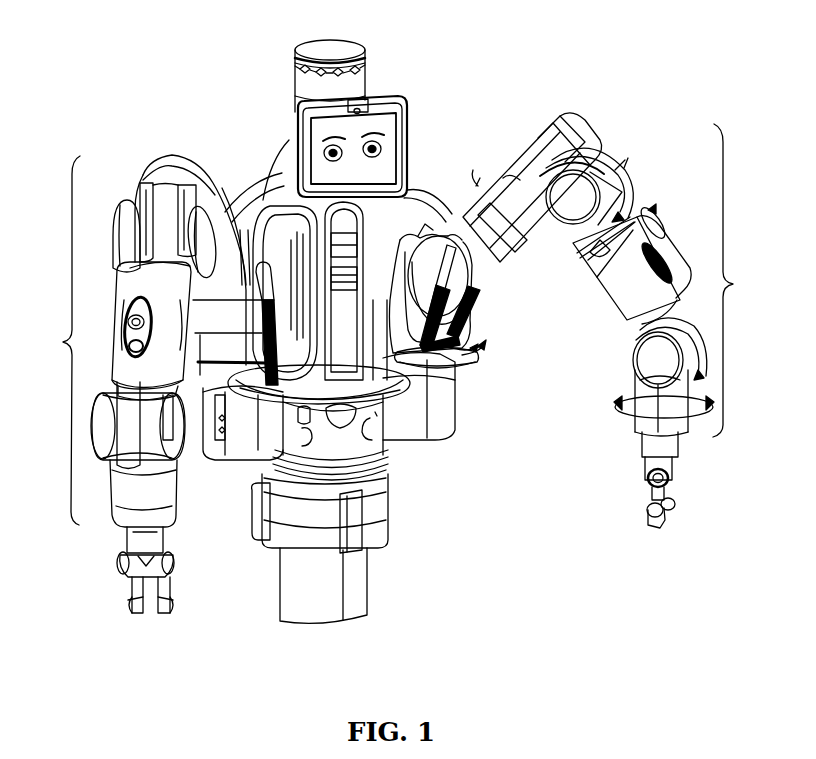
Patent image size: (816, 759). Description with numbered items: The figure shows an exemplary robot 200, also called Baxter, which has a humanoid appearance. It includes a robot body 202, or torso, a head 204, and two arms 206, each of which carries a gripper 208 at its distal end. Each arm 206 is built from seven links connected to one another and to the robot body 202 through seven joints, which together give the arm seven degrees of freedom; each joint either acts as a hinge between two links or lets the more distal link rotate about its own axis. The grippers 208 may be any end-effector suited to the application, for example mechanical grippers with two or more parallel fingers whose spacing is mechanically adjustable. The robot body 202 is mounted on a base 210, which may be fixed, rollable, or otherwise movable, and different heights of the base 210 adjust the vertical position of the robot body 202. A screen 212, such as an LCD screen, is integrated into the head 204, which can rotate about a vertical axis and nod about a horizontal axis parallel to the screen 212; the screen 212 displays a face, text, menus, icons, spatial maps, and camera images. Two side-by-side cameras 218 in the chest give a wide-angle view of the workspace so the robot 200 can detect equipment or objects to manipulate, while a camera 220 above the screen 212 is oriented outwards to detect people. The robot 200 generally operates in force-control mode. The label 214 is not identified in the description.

The robot 200 is at (125, 36).
The robot body 202 is at (386, 445).
The head 204 is at (140, 341).
The arm 206 is at (576, 285).
The gripper 208 is at (130, 592).
The base 210 is at (368, 591).
The screen 212 is at (408, 143).
The head 214 is at (298, 71).
The cameras 218 is at (383, 223).
The camera 220 is at (359, 110).